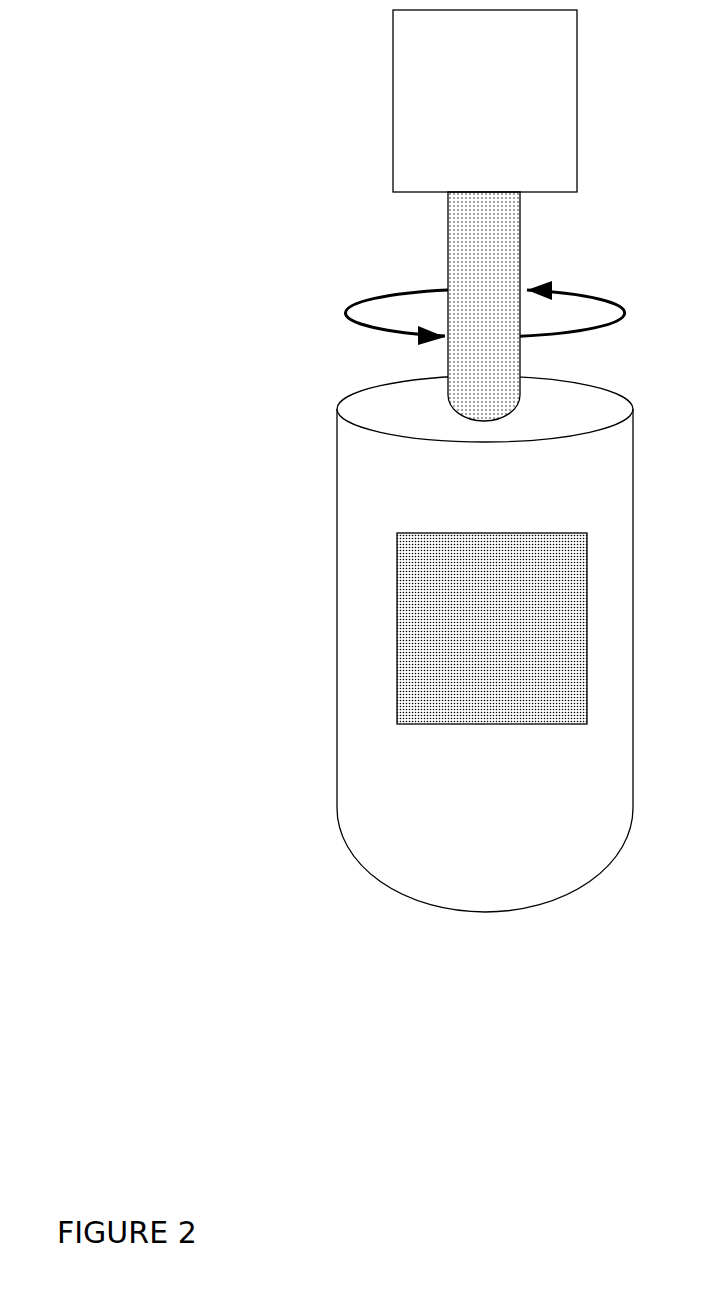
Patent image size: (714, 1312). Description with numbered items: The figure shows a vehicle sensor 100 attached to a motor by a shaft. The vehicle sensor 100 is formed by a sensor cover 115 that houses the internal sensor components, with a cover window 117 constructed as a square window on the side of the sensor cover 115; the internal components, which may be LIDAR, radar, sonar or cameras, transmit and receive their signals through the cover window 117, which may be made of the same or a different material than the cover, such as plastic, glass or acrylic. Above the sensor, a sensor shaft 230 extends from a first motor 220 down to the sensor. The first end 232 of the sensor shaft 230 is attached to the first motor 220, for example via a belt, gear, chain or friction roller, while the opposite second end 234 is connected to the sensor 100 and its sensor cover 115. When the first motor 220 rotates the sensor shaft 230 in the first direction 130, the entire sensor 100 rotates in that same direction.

The vehicle sensor 100 is at (430, 674).
The sensor cover 115 is at (337, 803).
The cover window 117 is at (397, 632).
The first direction 130 is at (345, 312).
The first motor 220 is at (393, 108).
The sensor shaft 230 is at (407, 306).
The first end of the sensor shaft 232 is at (465, 208).
The second end of the sensor shaft 234 is at (465, 394).